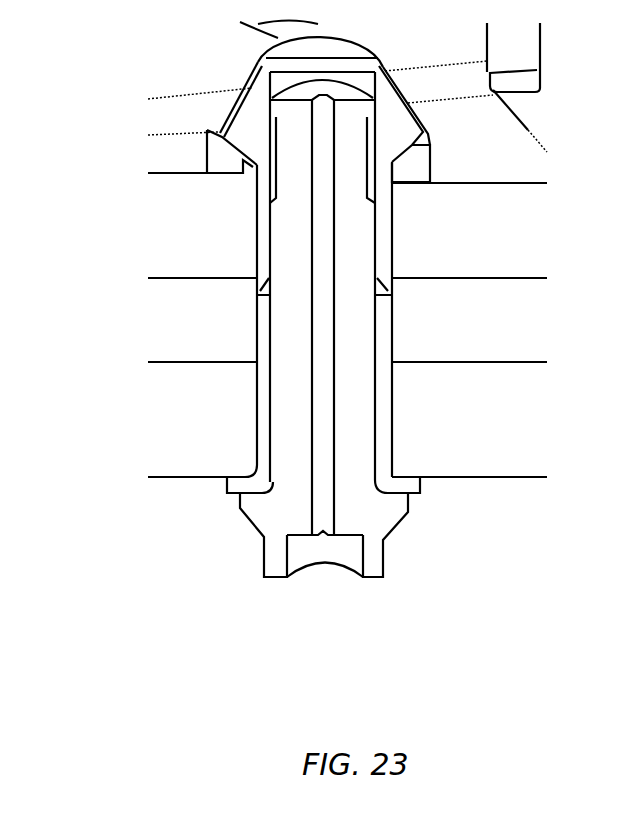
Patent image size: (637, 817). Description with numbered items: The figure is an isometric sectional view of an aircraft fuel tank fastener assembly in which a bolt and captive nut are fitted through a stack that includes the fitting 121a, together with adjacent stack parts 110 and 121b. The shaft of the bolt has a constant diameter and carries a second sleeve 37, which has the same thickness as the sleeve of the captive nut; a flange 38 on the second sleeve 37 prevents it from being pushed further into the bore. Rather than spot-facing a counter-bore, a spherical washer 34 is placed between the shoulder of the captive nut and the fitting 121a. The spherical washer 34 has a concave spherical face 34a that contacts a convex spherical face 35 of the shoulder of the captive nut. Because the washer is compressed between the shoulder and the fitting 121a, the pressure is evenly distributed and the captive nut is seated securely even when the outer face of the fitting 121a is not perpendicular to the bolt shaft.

The spherical washer 34 is at (222, 162).
The concave spherical face 34a is at (400, 157).
The convex spherical face 35 is at (412, 155).
The second sleeve 37 is at (385, 395).
The flange 38 is at (398, 487).
The housing wall 110 is at (137, 317).
The fitting 121a is at (137, 247).
The second plate 121b is at (140, 390).